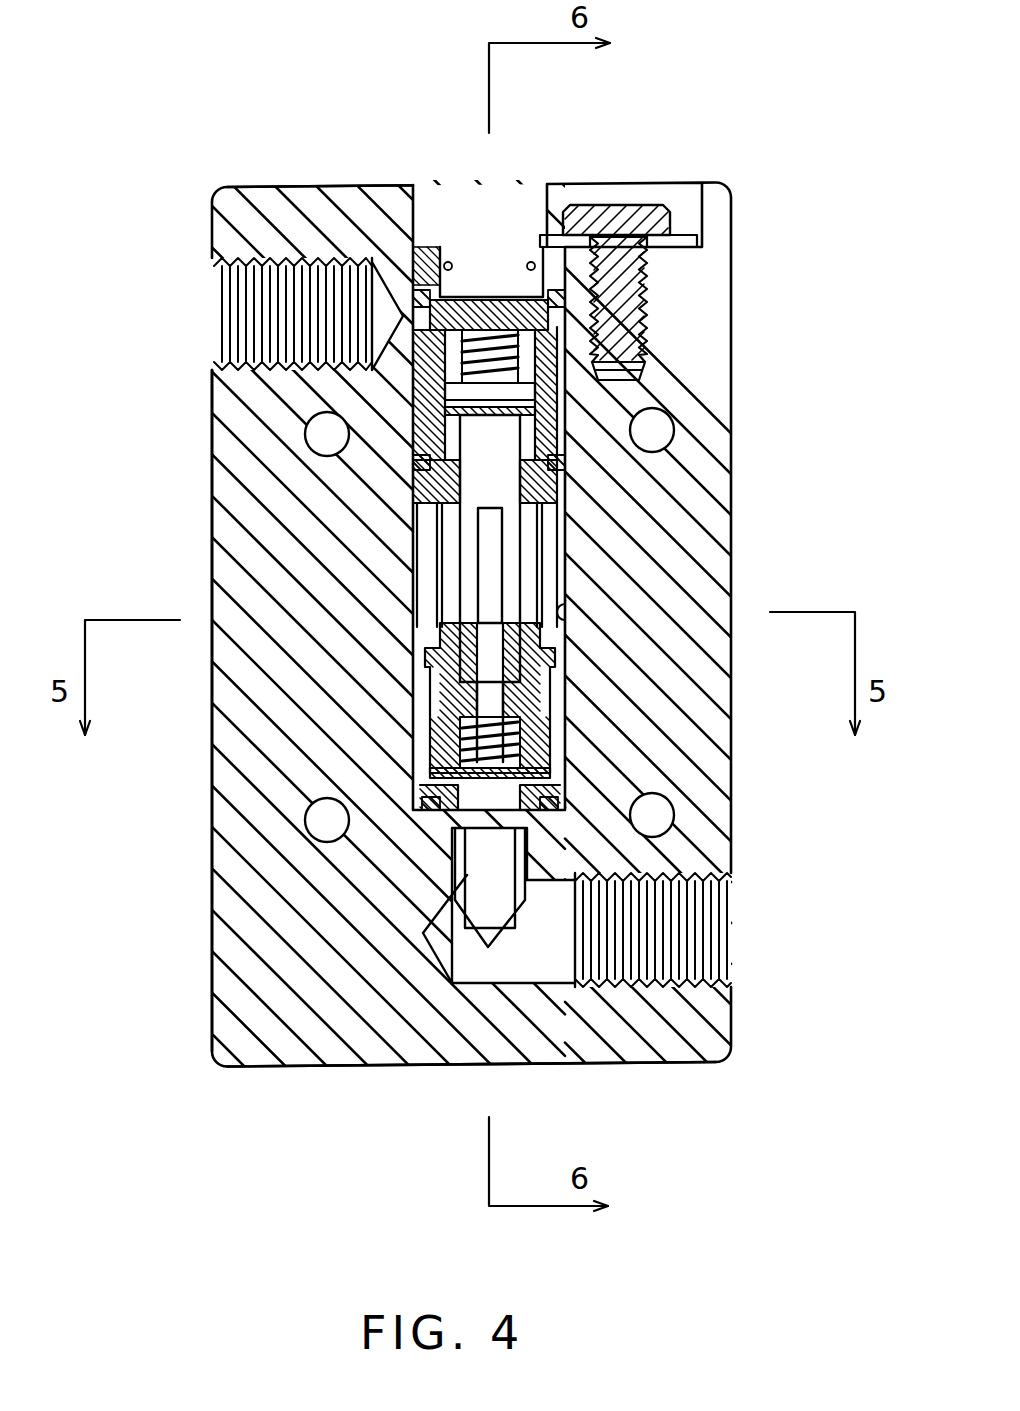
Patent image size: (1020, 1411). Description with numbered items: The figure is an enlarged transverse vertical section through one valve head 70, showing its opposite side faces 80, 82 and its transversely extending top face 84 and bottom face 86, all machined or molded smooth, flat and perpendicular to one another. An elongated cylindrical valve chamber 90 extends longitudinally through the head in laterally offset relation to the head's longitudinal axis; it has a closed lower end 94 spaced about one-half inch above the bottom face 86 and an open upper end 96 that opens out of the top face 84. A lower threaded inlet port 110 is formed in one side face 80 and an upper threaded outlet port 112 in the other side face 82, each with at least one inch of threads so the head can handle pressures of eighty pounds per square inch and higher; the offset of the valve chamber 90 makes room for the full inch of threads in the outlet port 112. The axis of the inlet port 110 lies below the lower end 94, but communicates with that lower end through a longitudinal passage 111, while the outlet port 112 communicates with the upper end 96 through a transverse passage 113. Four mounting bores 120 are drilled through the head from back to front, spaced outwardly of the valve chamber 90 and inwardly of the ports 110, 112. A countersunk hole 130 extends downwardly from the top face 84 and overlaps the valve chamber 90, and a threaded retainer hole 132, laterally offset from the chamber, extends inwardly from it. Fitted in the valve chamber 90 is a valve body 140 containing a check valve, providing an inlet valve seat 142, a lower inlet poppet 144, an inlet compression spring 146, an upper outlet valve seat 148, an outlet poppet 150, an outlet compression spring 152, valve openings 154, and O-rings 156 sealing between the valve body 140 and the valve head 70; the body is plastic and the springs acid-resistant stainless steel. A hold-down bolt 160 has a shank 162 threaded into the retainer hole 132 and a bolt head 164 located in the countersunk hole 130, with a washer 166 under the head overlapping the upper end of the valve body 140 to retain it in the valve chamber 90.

The valve head 70 is at (212, 186).
The side face 80 is at (731, 517).
The side face 82 is at (212, 487).
The top face 84 is at (296, 186).
The bottom face 86 is at (445, 1067).
The valve chamber 90 is at (560, 612).
The closed lower end 94 is at (458, 878).
The open upper end 96 is at (440, 186).
The inlet port 110 is at (700, 928).
The longitudinal passage 111 is at (527, 830).
The outlet port 112 is at (237, 313).
The transverse passage 113 is at (400, 374).
The mounting bores 120 is at (306, 430).
The countersunk hole 130 is at (725, 217).
The retainer hole 132 is at (650, 312).
The valve body 140 is at (463, 297).
The inlet valve seat 142 is at (465, 777).
The inlet poppet 144 is at (468, 745).
The inlet compression spring 146 is at (462, 722).
The outlet valve seat 148 is at (562, 403).
The outlet poppet 150 is at (560, 417).
The outlet compression spring 152 is at (462, 356).
The valve openings 154 is at (450, 580).
The O-rings 156 is at (553, 297).
The hold-down bolt 160 is at (597, 203).
The shank 162 is at (612, 330).
The bolt head 164 is at (622, 212).
The washer 166 is at (705, 238).